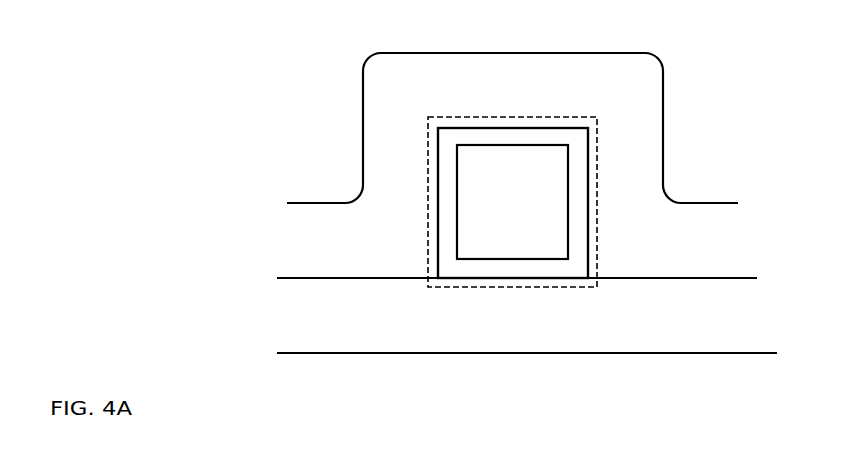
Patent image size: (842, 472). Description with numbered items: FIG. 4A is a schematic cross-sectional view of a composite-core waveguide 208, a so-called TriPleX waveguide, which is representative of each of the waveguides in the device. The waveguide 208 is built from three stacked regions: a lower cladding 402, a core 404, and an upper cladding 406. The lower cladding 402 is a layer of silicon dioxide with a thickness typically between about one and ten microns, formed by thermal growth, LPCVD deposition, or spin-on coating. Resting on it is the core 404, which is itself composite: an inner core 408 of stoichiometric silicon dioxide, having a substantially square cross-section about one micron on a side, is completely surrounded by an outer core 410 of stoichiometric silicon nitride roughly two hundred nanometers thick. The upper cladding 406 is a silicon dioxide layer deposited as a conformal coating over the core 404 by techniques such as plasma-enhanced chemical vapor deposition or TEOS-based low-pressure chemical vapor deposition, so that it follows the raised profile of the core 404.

The waveguide 208 is at (288, 95).
The lower cladding 402 is at (352, 333).
The core 404 is at (533, 118).
The upper cladding 406 is at (352, 258).
The inner core 408 is at (502, 240).
The outer core 410 is at (577, 268).